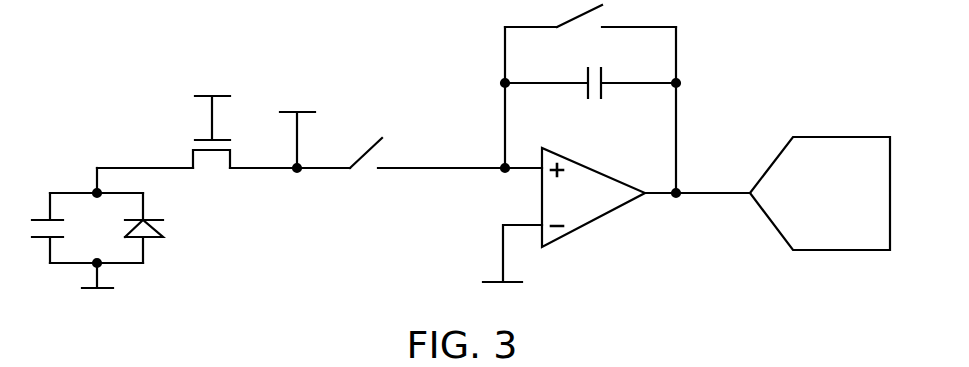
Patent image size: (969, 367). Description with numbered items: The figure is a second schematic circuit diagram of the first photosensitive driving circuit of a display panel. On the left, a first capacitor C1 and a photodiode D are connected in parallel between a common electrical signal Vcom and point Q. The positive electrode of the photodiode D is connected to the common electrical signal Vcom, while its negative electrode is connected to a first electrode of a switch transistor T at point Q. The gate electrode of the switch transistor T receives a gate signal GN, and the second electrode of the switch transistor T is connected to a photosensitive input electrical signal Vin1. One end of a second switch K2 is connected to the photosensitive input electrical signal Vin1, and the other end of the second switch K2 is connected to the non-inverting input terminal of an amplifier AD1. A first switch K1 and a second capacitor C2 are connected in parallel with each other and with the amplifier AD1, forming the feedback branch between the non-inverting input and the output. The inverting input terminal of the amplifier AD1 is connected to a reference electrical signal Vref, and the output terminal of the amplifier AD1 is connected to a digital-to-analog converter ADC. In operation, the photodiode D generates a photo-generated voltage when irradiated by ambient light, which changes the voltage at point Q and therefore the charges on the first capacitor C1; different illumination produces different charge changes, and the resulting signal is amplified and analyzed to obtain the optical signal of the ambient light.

The point Q is at (91, 174).
The switch transistor T is at (211, 164).
The gate signal GN is at (212, 108).
The first capacitor C1 is at (62, 228).
The photodiode D is at (156, 228).
The common electrical signal Vcom is at (96, 289).
The photosensitive input electrical signal Vin1 is at (297, 133).
The second switch K2 is at (366, 165).
The first switch K1 is at (590, 27).
The second capacitor C2 is at (590, 94).
The amplifier AD1 is at (593, 197).
The reference electrical signal Vref is at (512, 264).
The digital-to-analog converter ADC is at (820, 193).